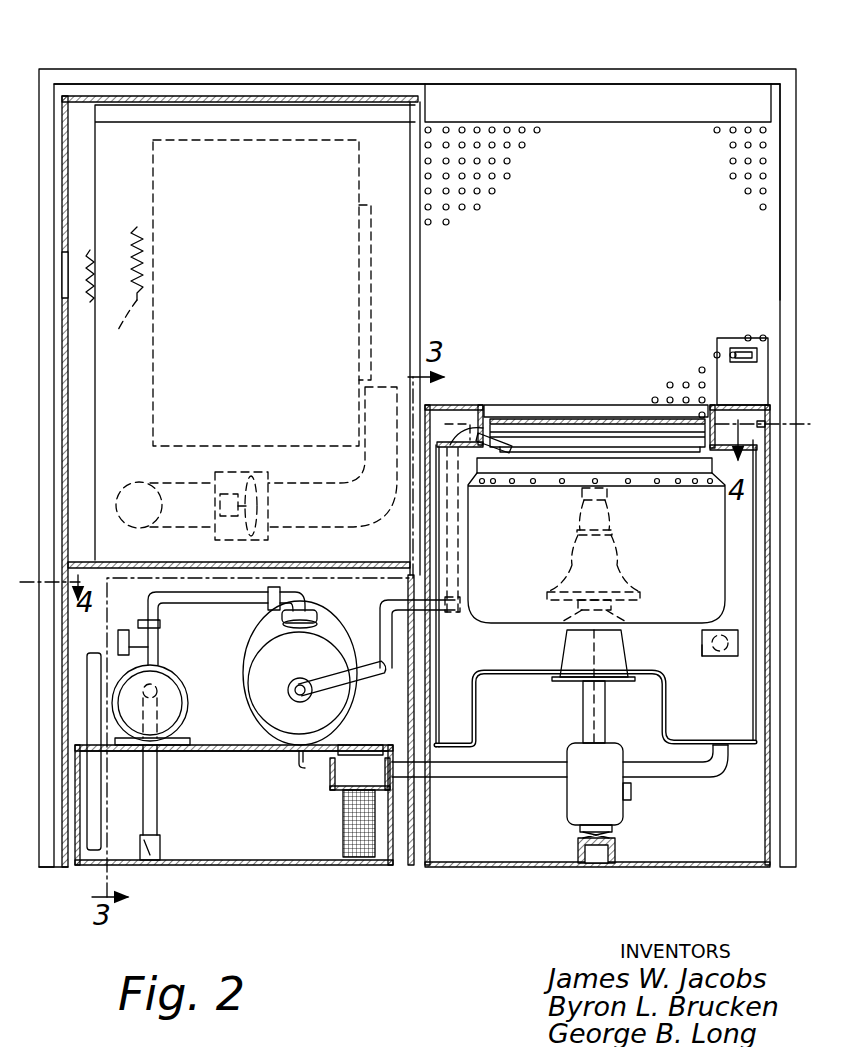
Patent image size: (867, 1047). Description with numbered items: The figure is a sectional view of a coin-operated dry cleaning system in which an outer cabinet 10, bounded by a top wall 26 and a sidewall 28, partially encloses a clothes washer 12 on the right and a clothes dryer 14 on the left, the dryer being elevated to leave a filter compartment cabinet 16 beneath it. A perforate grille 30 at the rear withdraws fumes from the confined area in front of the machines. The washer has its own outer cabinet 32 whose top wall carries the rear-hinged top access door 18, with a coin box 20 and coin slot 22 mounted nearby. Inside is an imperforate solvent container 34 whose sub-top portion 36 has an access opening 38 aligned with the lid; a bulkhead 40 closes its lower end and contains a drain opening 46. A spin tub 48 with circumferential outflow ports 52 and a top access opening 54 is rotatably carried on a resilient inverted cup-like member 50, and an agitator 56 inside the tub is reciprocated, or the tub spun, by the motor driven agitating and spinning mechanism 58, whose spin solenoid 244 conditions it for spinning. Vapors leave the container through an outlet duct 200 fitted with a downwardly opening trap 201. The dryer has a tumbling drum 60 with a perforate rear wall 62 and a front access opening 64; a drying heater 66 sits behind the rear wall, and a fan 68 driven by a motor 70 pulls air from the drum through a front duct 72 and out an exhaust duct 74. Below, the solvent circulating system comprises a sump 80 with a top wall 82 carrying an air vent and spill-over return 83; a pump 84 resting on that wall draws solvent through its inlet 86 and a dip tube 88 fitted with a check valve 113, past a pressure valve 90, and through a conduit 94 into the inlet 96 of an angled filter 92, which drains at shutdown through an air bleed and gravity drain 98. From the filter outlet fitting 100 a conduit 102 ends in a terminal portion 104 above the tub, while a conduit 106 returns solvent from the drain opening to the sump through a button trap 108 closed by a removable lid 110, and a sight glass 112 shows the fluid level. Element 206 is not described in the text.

The outer cabinet 10 is at (635, 69).
The clothes washer 12 is at (490, 405).
The clothes dryer 14 is at (143, 110).
The filter compartment cabinet 16 is at (63, 868).
The top access door 18 is at (524, 405).
The coin box 20 is at (752, 340).
The coin slot 22 is at (735, 352).
The top wall 26 is at (463, 78).
The sidewall 28 is at (788, 108).
The perforate grille 30 is at (578, 130).
The outer cabinet 32 is at (462, 405).
The solvent container 34 is at (438, 652).
The sub-top portion 36 is at (726, 440).
The access opening 38 is at (620, 425).
The bulkhead 40 is at (660, 675).
The drain opening 46 is at (723, 760).
The spin tub 48 is at (512, 606).
The resilient inverted cup-like member 50 is at (570, 648).
The outflow ports 52 is at (694, 483).
The top access opening 54 is at (590, 447).
The agitator 56 is at (620, 580).
The agitating and spinning mechanism 58 is at (565, 815).
The tumbling drum 60 is at (150, 148).
The perforate rear wall 62 is at (153, 220).
The front access opening 64 is at (372, 212).
The drying heater 66 is at (128, 330).
The fan 68 is at (258, 522).
The motor 70 is at (222, 506).
The front duct 72 is at (372, 512).
The exhaust duct 74 is at (138, 482).
The sump 80 is at (240, 848).
The top wall 82 is at (250, 760).
The air vent and spill-over return 83 is at (228, 760).
The pump 84 is at (165, 668).
The inlet 86 is at (158, 690).
The dip tube 88 is at (157, 795).
The pressure valve 90 is at (124, 630).
The filter 92 is at (352, 641).
The conduit 94 is at (205, 598).
The inlet 96 is at (305, 606).
The air bleed and gravity drain 98 is at (302, 762).
The outlet fitting 100 is at (297, 684).
The conduit 102 is at (372, 676).
The terminal portion 104 is at (515, 442).
The conduit 106 is at (492, 765).
The button trap 108 is at (343, 830).
The removable lid 110 is at (370, 748).
The sight glass 112 is at (90, 680).
The check valve 113 is at (161, 848).
The outlet duct 200 is at (726, 634).
The downwardly opening trap 201 is at (710, 657).
The thermostat 206 is at (66, 262).
The spin solenoid 244 is at (631, 795).